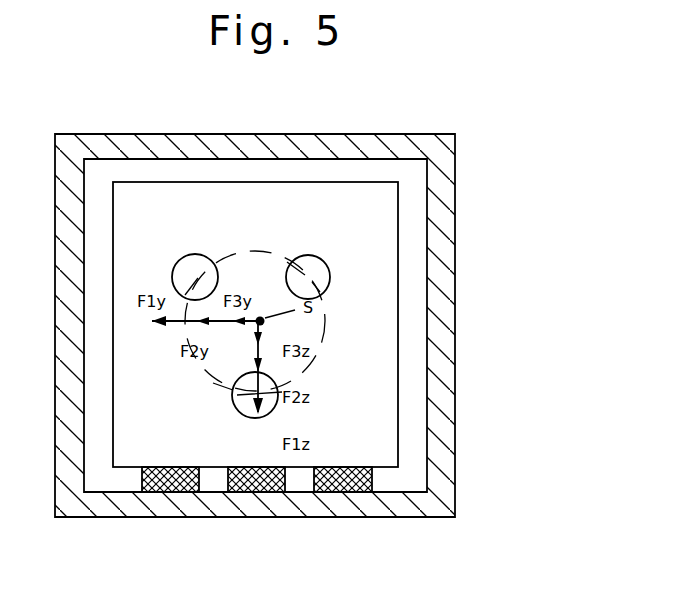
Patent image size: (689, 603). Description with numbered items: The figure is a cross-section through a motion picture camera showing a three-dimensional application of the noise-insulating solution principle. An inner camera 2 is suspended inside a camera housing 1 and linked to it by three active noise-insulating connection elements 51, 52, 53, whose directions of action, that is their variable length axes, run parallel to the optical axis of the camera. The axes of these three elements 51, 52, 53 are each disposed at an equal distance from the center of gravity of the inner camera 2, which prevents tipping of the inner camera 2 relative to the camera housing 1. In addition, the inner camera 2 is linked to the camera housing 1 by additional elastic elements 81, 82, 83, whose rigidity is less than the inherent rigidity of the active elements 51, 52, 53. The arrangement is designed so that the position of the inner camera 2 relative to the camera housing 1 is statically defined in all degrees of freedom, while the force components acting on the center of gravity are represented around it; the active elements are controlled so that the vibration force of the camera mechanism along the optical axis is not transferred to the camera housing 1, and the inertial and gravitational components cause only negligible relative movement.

The camera housing 1 is at (448, 140).
The inner camera 2 is at (373, 222).
The active noise-insulating connection element 51 is at (315, 262).
The active noise-insulating connection element 52 is at (247, 402).
The active noise-insulating connection element 53 is at (185, 267).
The additional elastic element 81 is at (357, 493).
The additional elastic element 82 is at (263, 495).
The additional elastic element 83 is at (177, 492).